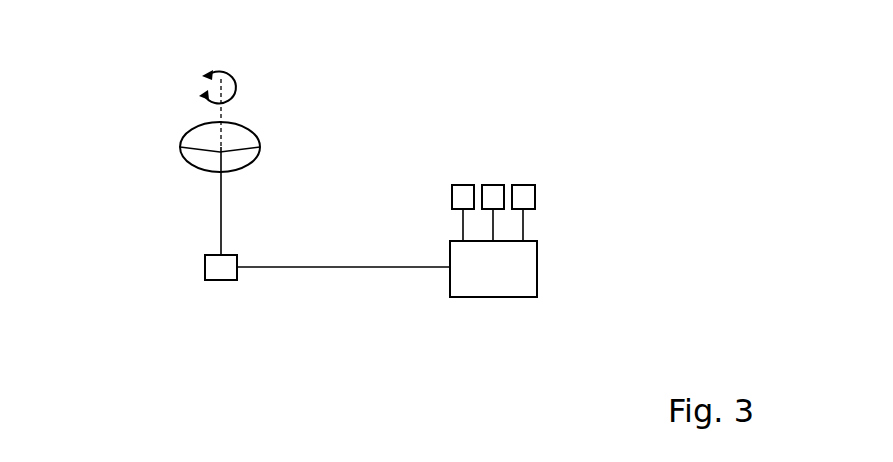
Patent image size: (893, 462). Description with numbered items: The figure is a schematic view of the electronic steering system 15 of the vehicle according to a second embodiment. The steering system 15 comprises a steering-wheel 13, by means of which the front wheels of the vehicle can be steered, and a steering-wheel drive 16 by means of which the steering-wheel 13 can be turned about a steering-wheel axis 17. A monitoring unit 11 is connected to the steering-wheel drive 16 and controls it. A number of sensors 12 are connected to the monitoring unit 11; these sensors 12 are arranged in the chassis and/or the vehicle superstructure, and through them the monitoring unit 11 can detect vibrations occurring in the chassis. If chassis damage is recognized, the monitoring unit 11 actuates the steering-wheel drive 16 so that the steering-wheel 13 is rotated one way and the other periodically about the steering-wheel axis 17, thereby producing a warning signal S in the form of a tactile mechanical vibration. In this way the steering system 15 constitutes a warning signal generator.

The monitoring unit 11 is at (532, 272).
The sensors 12 is at (465, 192).
The steering-wheel 13 is at (187, 163).
The electronic steering system 15 is at (145, 112).
The steering-wheel drive 16 is at (213, 275).
The steering-wheel axis 17 is at (222, 112).
The warning signal S is at (230, 75).